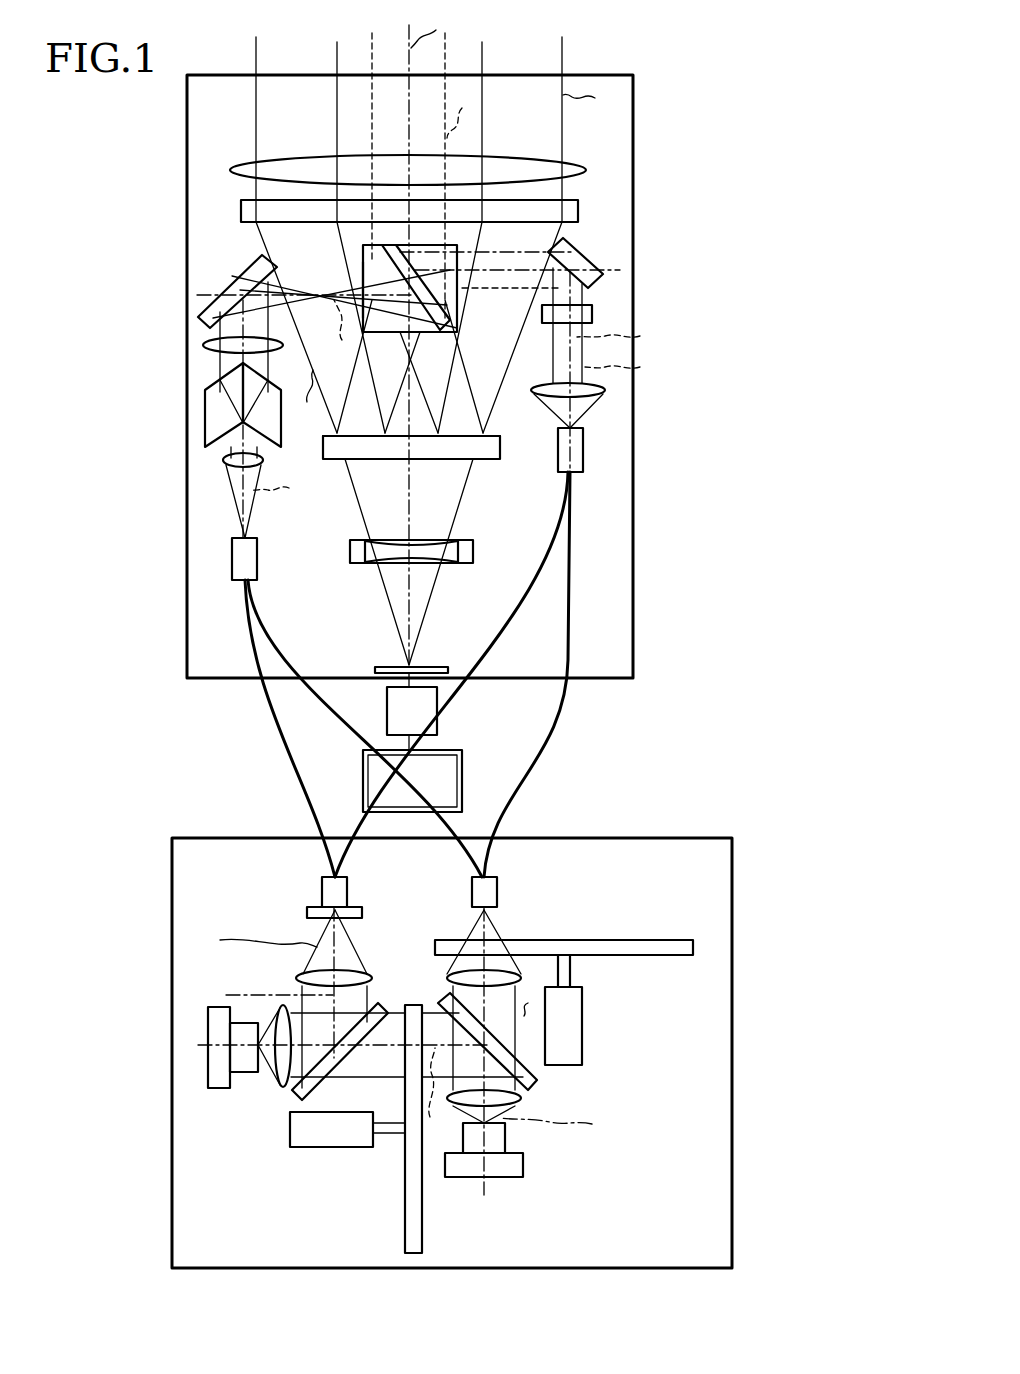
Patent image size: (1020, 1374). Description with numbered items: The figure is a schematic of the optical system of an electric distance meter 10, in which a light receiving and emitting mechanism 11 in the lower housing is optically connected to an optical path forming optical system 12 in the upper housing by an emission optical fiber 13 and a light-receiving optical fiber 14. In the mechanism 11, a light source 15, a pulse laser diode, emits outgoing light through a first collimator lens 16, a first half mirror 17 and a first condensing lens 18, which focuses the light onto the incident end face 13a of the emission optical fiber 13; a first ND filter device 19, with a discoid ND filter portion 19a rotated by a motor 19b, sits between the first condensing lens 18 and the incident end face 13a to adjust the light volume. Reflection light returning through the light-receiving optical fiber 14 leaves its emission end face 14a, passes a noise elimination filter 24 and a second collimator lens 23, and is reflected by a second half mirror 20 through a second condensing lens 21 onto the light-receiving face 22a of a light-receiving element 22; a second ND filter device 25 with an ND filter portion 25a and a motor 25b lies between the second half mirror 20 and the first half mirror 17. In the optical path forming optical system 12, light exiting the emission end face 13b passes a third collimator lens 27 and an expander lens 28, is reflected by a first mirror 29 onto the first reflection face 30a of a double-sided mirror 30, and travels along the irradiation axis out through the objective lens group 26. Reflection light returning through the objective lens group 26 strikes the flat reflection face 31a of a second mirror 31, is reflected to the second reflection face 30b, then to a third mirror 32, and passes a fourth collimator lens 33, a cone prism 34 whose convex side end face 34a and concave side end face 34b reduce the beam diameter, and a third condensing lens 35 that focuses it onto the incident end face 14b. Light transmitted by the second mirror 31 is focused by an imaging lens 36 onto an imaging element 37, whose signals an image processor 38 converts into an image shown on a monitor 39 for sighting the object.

The electric distance meter 10 is at (676, 568).
The light receiving and emitting mechanism 11 is at (736, 950).
The optical path forming optical system 12 is at (633, 470).
The emission optical fiber 13 is at (573, 590).
The incident end face 13a is at (497, 907).
The emission end face 13b is at (584, 429).
The light-receiving optical fiber 14 is at (252, 667).
The emission end face 14a is at (318, 907).
The incident end face 14b is at (259, 539).
The light source 15 is at (520, 1163).
The first collimator lens 16 is at (523, 1098).
The first half mirror 17 is at (540, 1080).
The first condensing lens 18 is at (447, 973).
The first ND filter device 19 is at (581, 1002).
The ND filter portion 19a is at (627, 949).
The motor 19b is at (573, 1023).
The second half mirror 20 is at (382, 1002).
The second condensing lens 21 is at (280, 1084).
The light-receiving element 22 is at (185, 1078).
The light-receiving face 22a is at (262, 1060).
The second collimator lens 23 is at (300, 975).
The noise elimination filter 24 is at (362, 912).
The second ND filter device 25 is at (355, 1131).
The ND filter portion 25a is at (410, 1155).
The motor 25b is at (322, 1134).
The objective lens group 26 is at (589, 155).
The third collimator lens 27 is at (553, 389).
The expander lens 28 is at (593, 312).
The first mirror 29 is at (591, 272).
The double-sided mirror 30 is at (410, 301).
The first reflection face 30a is at (442, 298).
The second reflection face 30b is at (364, 277).
The second mirror 31 is at (436, 452).
The flat reflection face 31a is at (458, 433).
The third mirror 32 is at (246, 278).
The fourth collimator lens 33 is at (204, 345).
The cone prism 34 is at (233, 419).
The convex side end face 34a is at (214, 388).
The concave side end face 34b is at (262, 443).
The third condensing lens 35 is at (224, 460).
The imaging lens 36 is at (464, 543).
The imaging element 37 is at (445, 666).
The image processor 38 is at (387, 722).
The monitor 39 is at (463, 778).